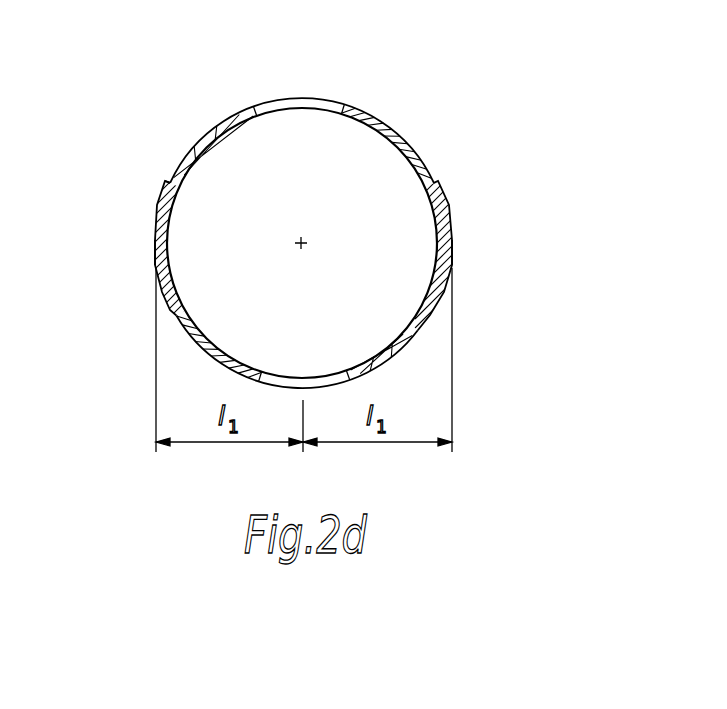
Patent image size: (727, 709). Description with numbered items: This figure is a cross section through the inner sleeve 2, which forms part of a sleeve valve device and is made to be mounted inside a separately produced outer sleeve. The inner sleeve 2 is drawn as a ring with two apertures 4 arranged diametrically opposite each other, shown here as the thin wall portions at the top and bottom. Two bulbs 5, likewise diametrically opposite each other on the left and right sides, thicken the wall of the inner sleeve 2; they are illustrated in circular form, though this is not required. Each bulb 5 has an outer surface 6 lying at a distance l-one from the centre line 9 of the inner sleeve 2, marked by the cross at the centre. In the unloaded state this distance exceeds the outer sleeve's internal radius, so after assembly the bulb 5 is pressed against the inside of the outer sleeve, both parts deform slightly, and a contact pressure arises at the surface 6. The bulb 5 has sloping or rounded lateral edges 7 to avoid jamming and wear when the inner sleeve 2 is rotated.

The inner sleeve 2 is at (396, 133).
The apertures 4 is at (307, 102).
The bulbs 5 is at (157, 208).
The surfaces 6 is at (152, 242).
The sloping or rounded lateral edges 7 is at (167, 182).
The centre line 9 is at (305, 247).